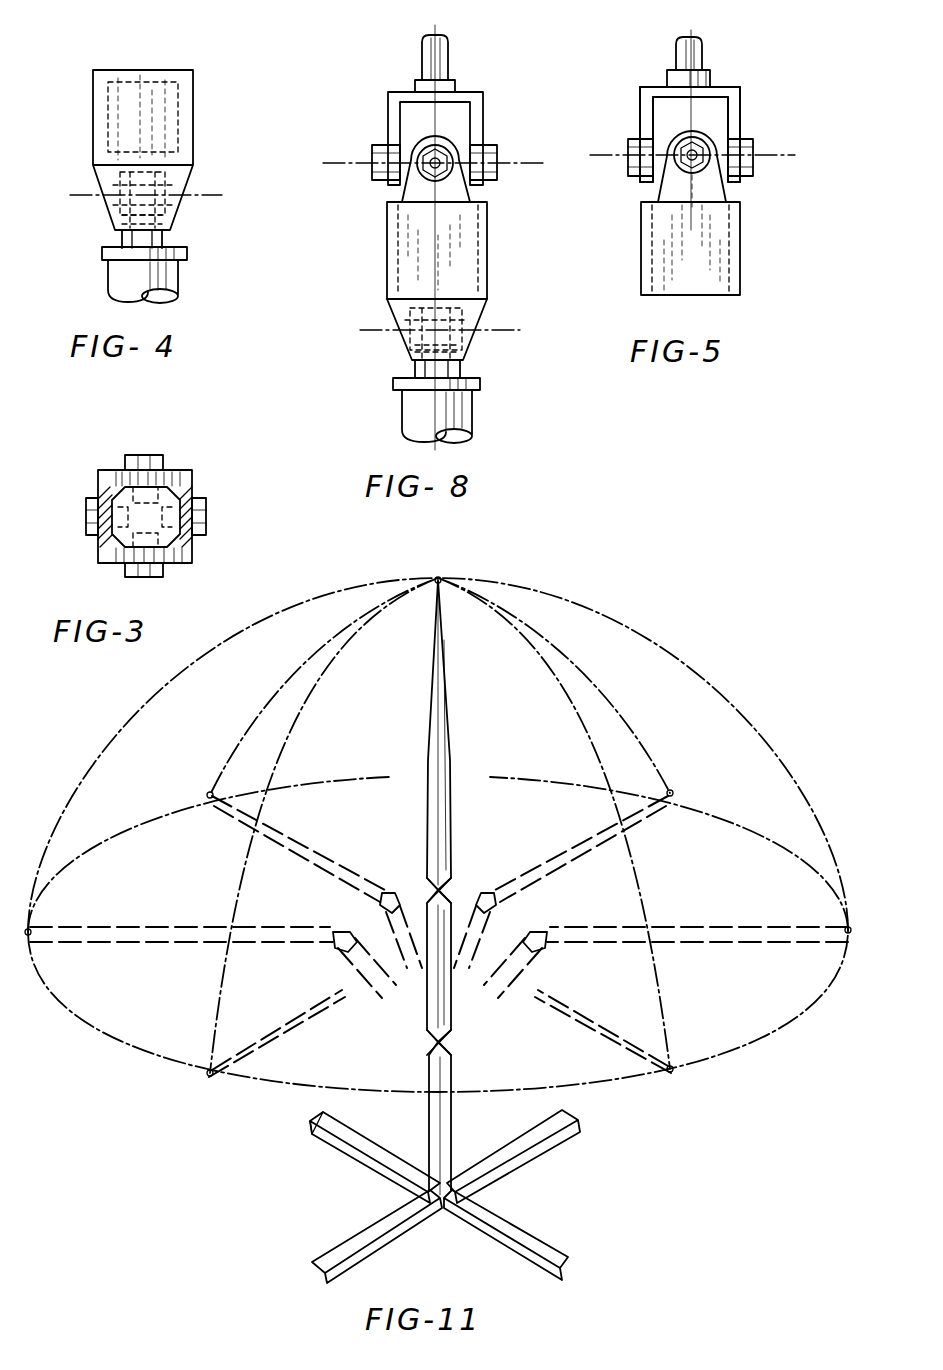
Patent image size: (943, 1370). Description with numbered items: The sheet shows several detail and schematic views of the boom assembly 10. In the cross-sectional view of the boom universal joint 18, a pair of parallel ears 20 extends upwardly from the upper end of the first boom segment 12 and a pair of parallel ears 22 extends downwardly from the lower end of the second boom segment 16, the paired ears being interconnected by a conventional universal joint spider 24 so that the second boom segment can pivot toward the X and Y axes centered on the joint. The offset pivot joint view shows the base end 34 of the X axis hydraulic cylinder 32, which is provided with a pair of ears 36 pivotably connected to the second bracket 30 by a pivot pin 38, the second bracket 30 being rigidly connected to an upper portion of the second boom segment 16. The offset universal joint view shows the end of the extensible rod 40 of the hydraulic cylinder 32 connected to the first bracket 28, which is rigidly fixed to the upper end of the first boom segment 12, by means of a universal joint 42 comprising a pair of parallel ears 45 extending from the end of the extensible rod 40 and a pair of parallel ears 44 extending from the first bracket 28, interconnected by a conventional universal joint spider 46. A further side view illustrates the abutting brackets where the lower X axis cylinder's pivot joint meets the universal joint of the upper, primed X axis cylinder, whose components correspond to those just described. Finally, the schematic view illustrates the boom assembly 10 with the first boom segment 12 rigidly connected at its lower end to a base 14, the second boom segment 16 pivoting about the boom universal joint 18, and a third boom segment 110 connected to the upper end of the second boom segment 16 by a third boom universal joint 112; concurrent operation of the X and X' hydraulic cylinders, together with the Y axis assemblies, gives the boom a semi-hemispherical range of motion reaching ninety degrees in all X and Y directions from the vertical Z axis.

In FIG. 11, the boom assembly 10 is at (651, 620).
In FIG. 11, the first boom segment 12 is at (453, 1116).
In FIG. 11, the base 14 is at (525, 1160).
In FIG. 11, the second boom segment 16 is at (510, 958).
In FIG. 3, the boom universal joint 18 is at (153, 450).
In FIG. 11, the boom universal joint 18 is at (442, 1042).
In FIG. 3, the parallel ears 20 is at (190, 493).
In FIG. 3, the parallel ears 22 is at (120, 468).
In FIG. 3, the universal joint spider 24 is at (180, 487).
In FIG. 8, the first bracket 28 is at (470, 228).
In FIG. 5, the first bracket 28 is at (715, 250).
In FIG. 4, the second bracket 30 is at (195, 95).
In FIG. 8, the X axis hydraulic cylinder 32 is at (470, 413).
In FIG. 4, the base end 34 is at (170, 277).
In FIG. 4, the ears 36 is at (160, 214).
In FIG. 8, the ears 36 is at (455, 345).
In FIG. 4, the pivot pin 38 is at (175, 190).
In FIG. 8, the pivot pin 38 is at (470, 322).
In FIG. 5, the extensible rod 40 is at (702, 47).
In FIG. 5, the universal joint 42 is at (772, 143).
In FIG. 8, the parallel ears 44 is at (400, 121).
In FIG. 5, the parallel ears 44 is at (727, 190).
In FIG. 8, the parallel ears 45 is at (470, 193).
In FIG. 5, the parallel ears 45 is at (655, 117).
In FIG. 8, the universal joint spider 46 is at (455, 142).
In FIG. 5, the universal joint spider 46 is at (713, 138).
In FIG. 11, the third boom segment 110 is at (446, 681).
In FIG. 11, the third boom universal joint 112 is at (447, 890).